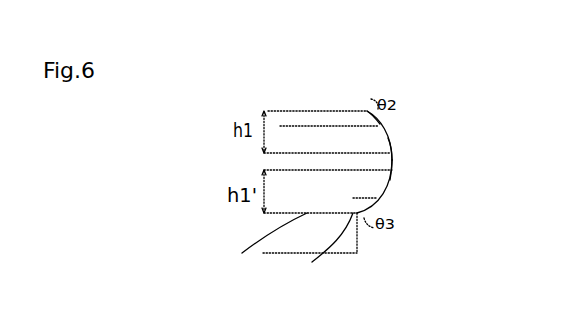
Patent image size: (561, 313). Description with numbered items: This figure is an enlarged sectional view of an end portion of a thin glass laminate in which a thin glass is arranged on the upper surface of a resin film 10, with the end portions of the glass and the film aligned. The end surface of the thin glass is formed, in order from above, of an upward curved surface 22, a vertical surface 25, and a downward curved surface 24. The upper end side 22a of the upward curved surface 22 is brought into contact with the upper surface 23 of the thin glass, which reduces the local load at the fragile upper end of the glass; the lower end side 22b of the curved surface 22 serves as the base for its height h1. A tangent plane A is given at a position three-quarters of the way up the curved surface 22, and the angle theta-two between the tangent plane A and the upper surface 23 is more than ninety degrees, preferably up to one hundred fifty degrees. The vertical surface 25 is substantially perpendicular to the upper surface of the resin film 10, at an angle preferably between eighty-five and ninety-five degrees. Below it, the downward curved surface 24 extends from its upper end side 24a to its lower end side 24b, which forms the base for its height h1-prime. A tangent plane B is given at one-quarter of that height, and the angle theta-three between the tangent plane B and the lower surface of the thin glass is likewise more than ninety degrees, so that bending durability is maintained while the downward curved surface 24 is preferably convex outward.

The resin film 10 is at (356, 245).
The upward curved surface 22 is at (384, 128).
The upper end side of the curved surface 22a is at (365, 109).
The lower end side of the curved surface 22b is at (392, 150).
The upper surface 23 is at (307, 111).
The downward curved surface 24 is at (392, 180).
The upper end side of the downward curved surface 24a is at (393, 170).
The lower end side of the downward curved surface 24b is at (315, 250).
The vertical surface 25 is at (259, 239).
The tangent plane A is at (363, 104).
The tangent plane B is at (366, 222).